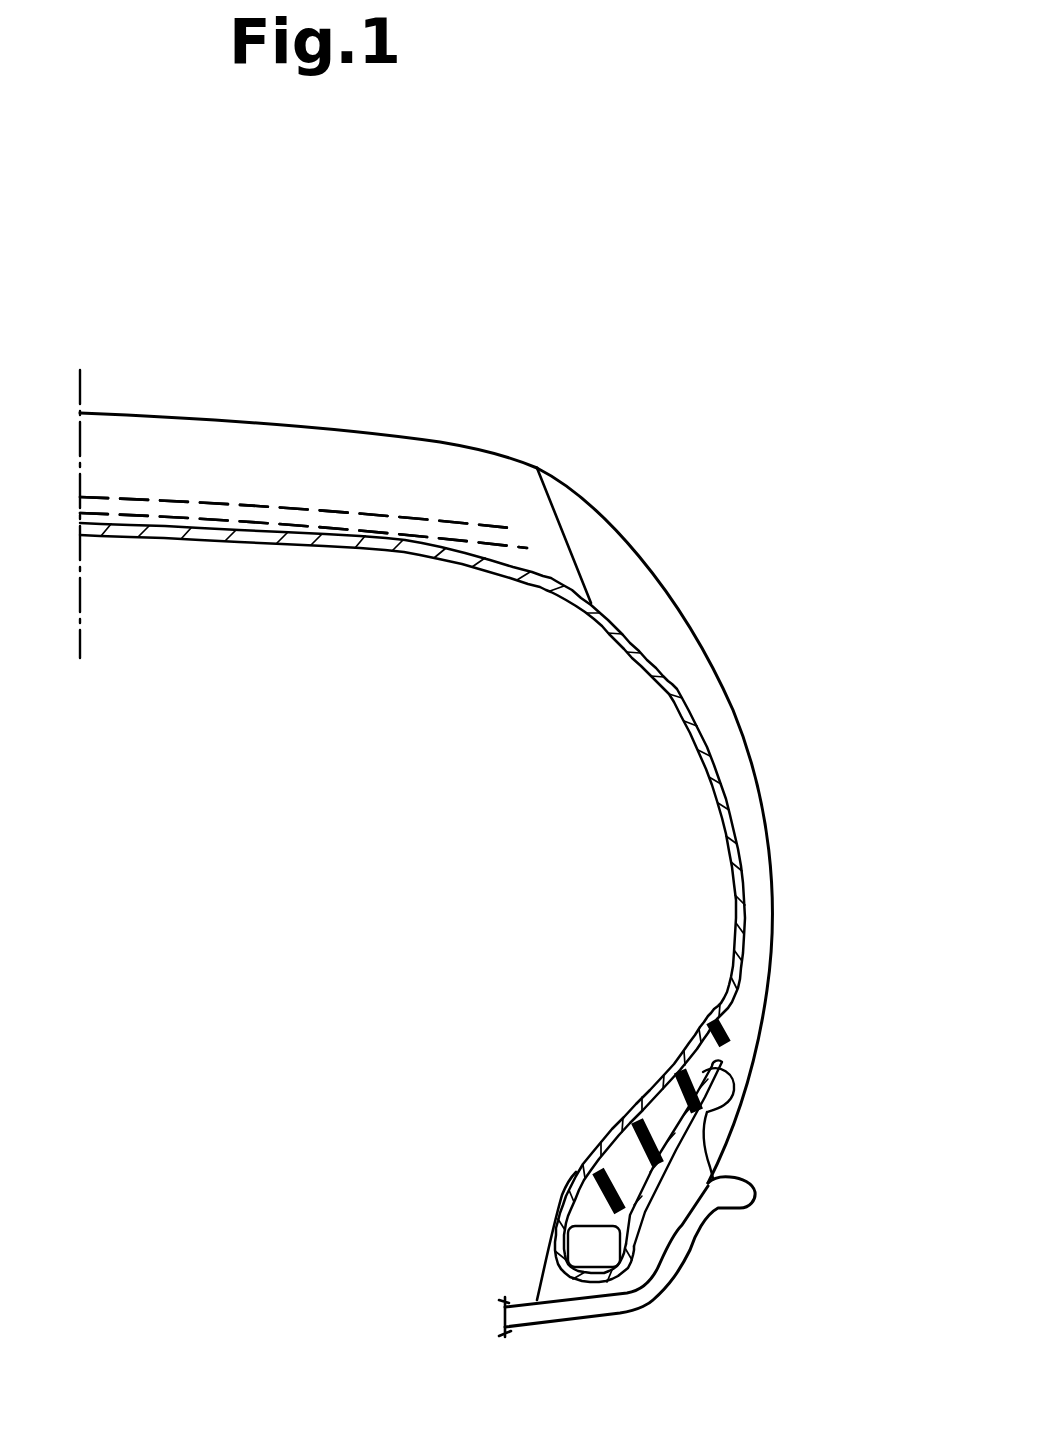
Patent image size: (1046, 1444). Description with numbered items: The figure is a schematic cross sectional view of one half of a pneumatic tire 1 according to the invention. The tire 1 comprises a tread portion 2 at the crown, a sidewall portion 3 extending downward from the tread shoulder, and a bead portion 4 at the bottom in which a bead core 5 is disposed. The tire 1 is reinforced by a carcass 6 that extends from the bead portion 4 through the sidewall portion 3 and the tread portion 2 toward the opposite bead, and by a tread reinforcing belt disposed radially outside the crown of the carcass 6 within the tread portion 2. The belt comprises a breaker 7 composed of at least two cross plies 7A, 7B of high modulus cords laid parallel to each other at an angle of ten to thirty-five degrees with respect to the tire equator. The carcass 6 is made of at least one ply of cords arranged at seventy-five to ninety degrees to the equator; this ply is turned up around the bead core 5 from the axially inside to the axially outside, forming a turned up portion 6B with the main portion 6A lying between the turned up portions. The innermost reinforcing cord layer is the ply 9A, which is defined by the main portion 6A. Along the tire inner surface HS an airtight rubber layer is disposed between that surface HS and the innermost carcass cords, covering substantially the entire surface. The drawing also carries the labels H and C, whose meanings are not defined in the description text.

The pneumatic tire 1 is at (660, 477).
The tread portion 2 is at (145, 413).
The sidewall portion 3 is at (728, 724).
The bead portion 4 is at (528, 1205).
The bead core 5 is at (573, 1233).
The carcass 6 is at (632, 655).
The main portion 6A is at (740, 912).
The carcass ply 9A is at (408, 908).
The turned up portion 6B is at (701, 1040).
The breaker 7 is at (426, 294).
The breaker ply 7A is at (305, 512).
The breaker ply 7B is at (253, 495).
The tire inner surface HS is at (572, 607).
The tire section height H is at (352, 739).
The tire equator centerline C is at (78, 493).